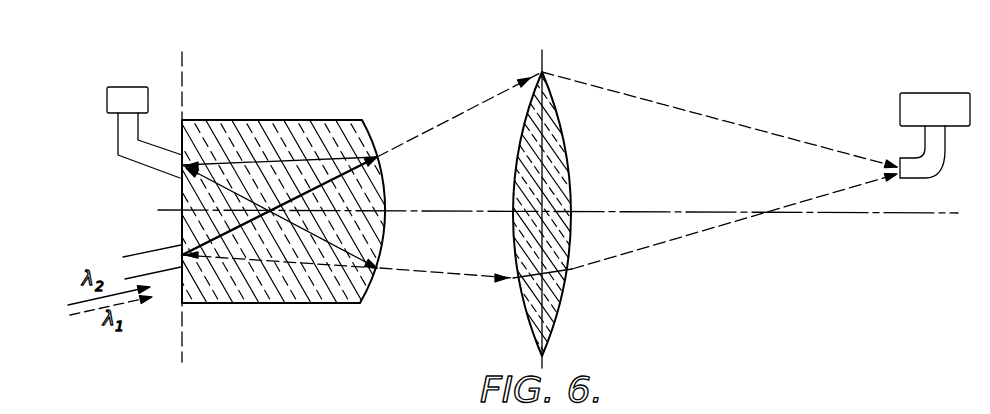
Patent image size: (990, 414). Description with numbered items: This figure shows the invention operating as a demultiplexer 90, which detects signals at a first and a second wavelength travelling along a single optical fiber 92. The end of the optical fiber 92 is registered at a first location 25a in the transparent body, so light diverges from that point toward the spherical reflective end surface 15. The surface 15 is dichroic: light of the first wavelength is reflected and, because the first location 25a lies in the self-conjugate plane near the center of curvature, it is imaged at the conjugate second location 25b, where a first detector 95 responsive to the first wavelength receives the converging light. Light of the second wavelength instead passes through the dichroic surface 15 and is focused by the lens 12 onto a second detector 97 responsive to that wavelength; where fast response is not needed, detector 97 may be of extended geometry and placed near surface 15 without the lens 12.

The spherical reflective end surface 15 is at (411, 116).
The lens 12 is at (562, 123).
The first location 25a is at (182, 248).
The second location 25b is at (182, 172).
The optical fiber 92 is at (140, 253).
The first detector 95 is at (115, 117).
The second detector 97 is at (900, 112).
The demultiplexer 90 is at (414, 349).